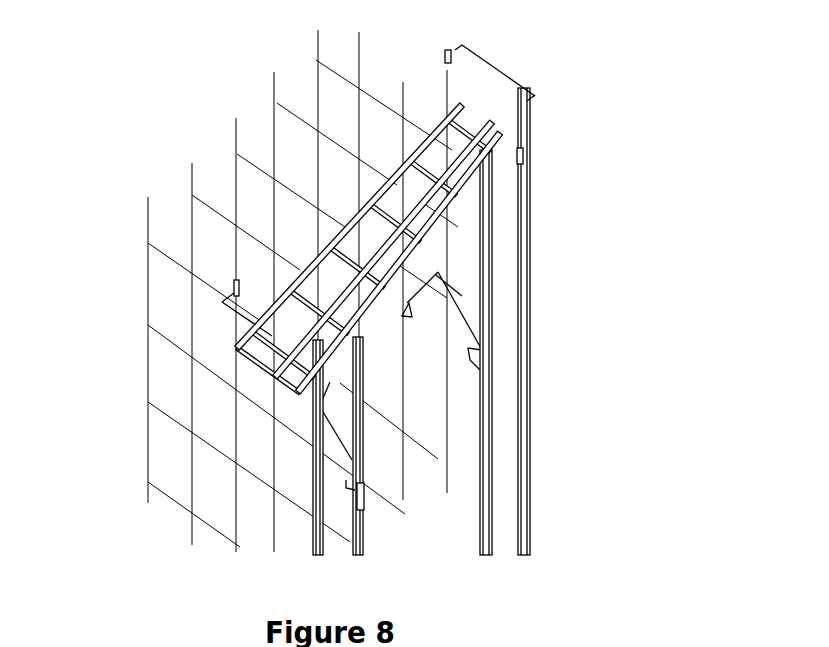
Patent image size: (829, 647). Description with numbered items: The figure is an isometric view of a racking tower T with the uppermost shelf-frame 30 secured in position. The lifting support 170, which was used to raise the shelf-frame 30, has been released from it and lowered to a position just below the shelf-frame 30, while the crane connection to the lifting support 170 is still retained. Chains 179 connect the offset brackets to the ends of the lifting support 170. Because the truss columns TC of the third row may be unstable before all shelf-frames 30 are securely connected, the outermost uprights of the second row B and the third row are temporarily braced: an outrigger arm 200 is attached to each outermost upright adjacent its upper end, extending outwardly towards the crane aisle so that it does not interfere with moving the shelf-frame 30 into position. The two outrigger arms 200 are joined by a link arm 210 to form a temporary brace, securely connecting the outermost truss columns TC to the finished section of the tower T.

The shelf-frame 30 is at (258, 395).
The lifting support 170 is at (410, 350).
The chains 179 is at (463, 308).
The outrigger arm 200 is at (462, 45).
The link arm 210 is at (505, 70).
The tower T is at (262, 84).
The second row B is at (436, 40).
The truss column TC is at (358, 562).